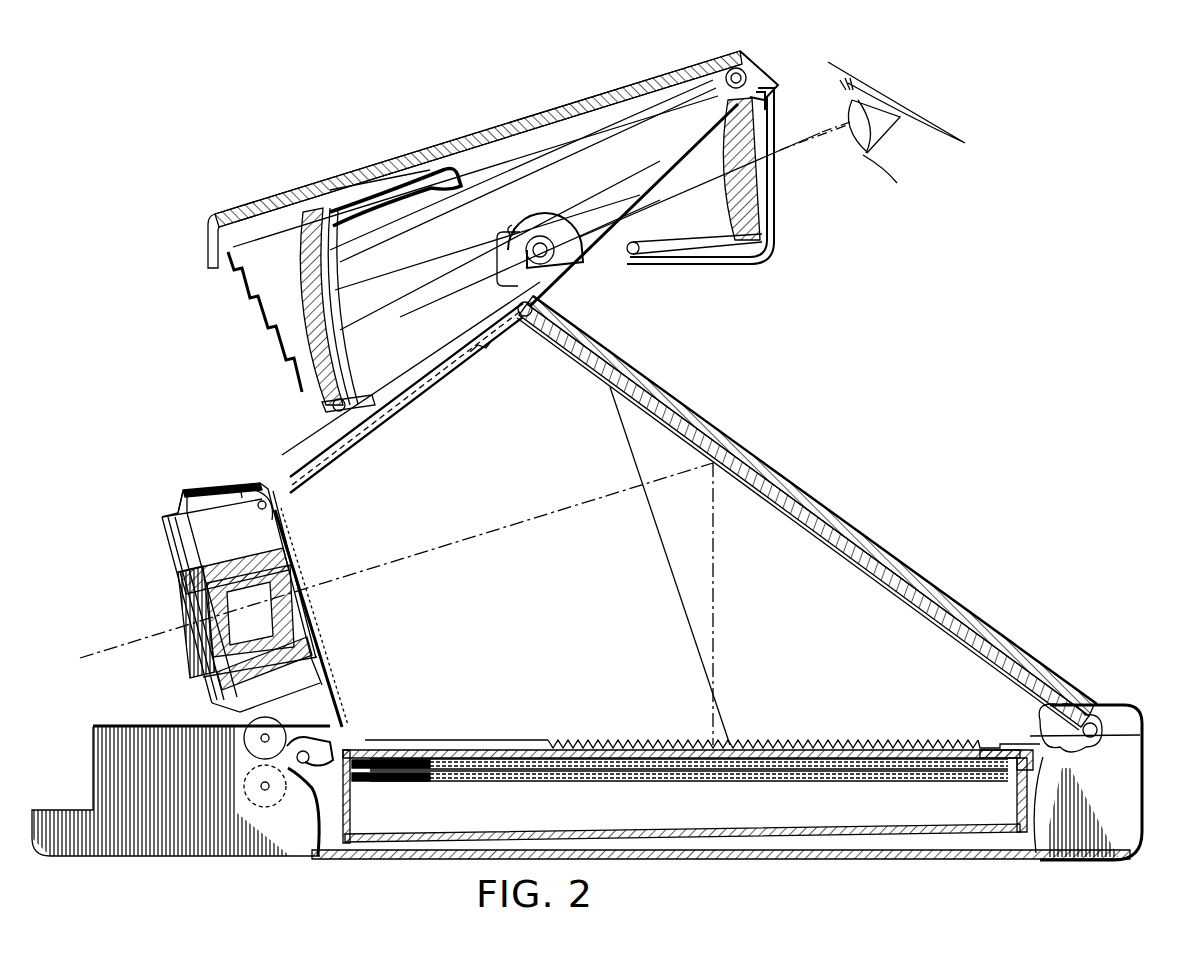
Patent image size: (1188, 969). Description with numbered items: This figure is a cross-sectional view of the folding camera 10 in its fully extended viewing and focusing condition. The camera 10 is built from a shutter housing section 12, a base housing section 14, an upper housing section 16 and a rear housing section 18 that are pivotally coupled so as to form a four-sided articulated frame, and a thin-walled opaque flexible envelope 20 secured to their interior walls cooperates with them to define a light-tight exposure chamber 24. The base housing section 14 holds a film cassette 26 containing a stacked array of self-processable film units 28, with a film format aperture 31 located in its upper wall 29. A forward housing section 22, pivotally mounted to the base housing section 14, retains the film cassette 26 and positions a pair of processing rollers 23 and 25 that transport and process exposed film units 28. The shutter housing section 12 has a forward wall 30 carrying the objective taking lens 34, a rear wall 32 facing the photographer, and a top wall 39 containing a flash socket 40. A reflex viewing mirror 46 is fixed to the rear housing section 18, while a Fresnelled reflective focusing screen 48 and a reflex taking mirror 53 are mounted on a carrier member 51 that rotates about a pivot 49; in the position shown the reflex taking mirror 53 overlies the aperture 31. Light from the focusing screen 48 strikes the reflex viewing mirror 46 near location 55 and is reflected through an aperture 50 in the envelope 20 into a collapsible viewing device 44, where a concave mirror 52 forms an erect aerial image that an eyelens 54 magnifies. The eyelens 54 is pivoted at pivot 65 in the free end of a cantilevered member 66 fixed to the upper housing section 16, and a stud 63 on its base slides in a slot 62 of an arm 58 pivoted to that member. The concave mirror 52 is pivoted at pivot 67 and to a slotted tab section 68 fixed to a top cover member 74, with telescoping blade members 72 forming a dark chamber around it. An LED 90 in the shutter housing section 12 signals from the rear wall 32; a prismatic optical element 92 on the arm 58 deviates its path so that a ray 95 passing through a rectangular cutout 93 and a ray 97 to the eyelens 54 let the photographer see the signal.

The camera 10 is at (712, 389).
The shutter housing section 12 is at (219, 472).
The base housing section 14 is at (1154, 828).
The upper housing section 16 is at (312, 458).
The rear housing section 18 is at (880, 554).
The flexible envelope 20 is at (338, 714).
The forward housing section 22 is at (258, 856).
The processing roller 23 is at (272, 718).
The exposure chamber 24 is at (862, 640).
The processing roller 25 is at (278, 802).
The film cassette 26 is at (845, 866).
The film units 28 is at (829, 800).
The upper wall of film cassette 29 is at (402, 750).
The forward wall 30 is at (176, 546).
The film format aperture 31 is at (458, 750).
The rear wall 32 is at (290, 548).
The objective taking lens 34 is at (200, 610).
The top wall 39 is at (240, 484).
The flash socket 40 is at (200, 492).
The collapsible viewing device 44 is at (540, 88).
The reflex viewing mirror 46 is at (840, 562).
The focusing screen 48 is at (570, 740).
The pivot 49 is at (1093, 722).
The aperture 50 is at (490, 352).
The carrier member 51 is at (1000, 748).
The concave mirror 52 is at (342, 302).
The reflex taking mirror 53 is at (866, 750).
The eyelens 54 is at (734, 158).
The location on reflex viewing mirror 55 is at (614, 400).
The arm 58 is at (710, 264).
The slot 62 is at (662, 262).
The stud 63 is at (768, 238).
The pivot 65 is at (746, 74).
The cantilevered member 66 is at (560, 270).
The pivot 67 is at (352, 400).
The slotted tab section 68 is at (422, 162).
The telescoping blade members 72 is at (238, 292).
The top cover member 74 is at (636, 86).
The LED 90 is at (290, 522).
The prismatic optical element 92 is at (600, 260).
The rectangular cutout 93 is at (446, 374).
The ray 95 is at (592, 292).
The ray 97 is at (690, 194).